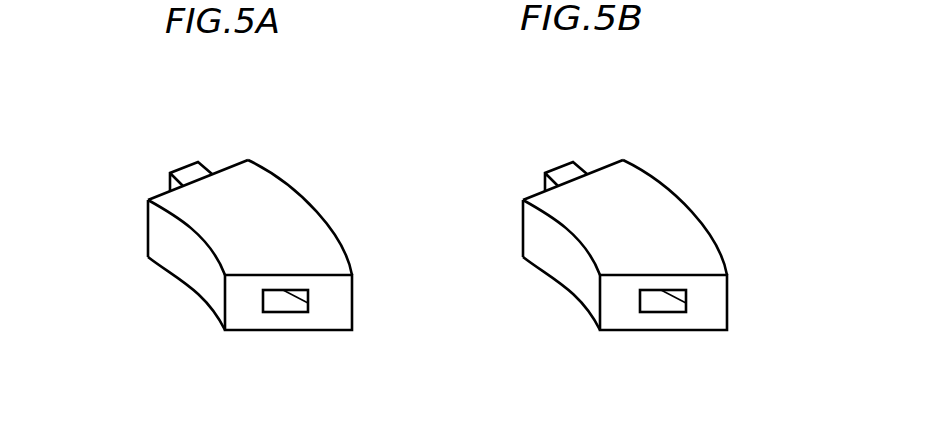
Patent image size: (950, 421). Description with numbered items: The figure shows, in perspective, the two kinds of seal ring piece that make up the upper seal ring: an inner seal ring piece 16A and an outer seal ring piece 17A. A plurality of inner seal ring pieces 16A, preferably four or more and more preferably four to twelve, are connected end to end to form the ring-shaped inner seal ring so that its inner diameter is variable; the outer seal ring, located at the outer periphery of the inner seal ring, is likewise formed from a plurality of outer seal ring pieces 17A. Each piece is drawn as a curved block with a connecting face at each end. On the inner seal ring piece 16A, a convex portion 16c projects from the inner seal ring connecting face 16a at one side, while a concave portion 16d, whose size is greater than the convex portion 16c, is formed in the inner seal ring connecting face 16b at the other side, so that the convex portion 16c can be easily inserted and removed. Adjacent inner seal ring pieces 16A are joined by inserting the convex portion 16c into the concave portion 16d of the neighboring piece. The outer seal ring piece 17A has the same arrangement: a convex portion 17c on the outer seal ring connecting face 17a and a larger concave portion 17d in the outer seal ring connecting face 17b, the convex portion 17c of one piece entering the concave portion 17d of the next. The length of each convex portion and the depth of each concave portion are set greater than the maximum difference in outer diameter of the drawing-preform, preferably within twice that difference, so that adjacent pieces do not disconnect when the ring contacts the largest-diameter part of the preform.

In FIG. 5A, the inner seal ring piece 16A is at (275, 232).
In FIG. 5A, the inner seal ring connecting face 16a is at (159, 193).
In FIG. 5A, the inner seal ring connecting face 16b is at (253, 322).
In FIG. 5A, the convex portion 16c is at (197, 170).
In FIG. 5A, the concave portion 16d is at (305, 301).
In FIG. 5B, the outer seal ring piece 17A is at (670, 241).
In FIG. 5B, the outer seal ring connecting face 17a is at (535, 193).
In FIG. 5B, the outer seal ring connecting face 17b is at (625, 322).
In FIG. 5B, the convex portion 17c is at (576, 165).
In FIG. 5B, the concave portion 17d is at (683, 302).